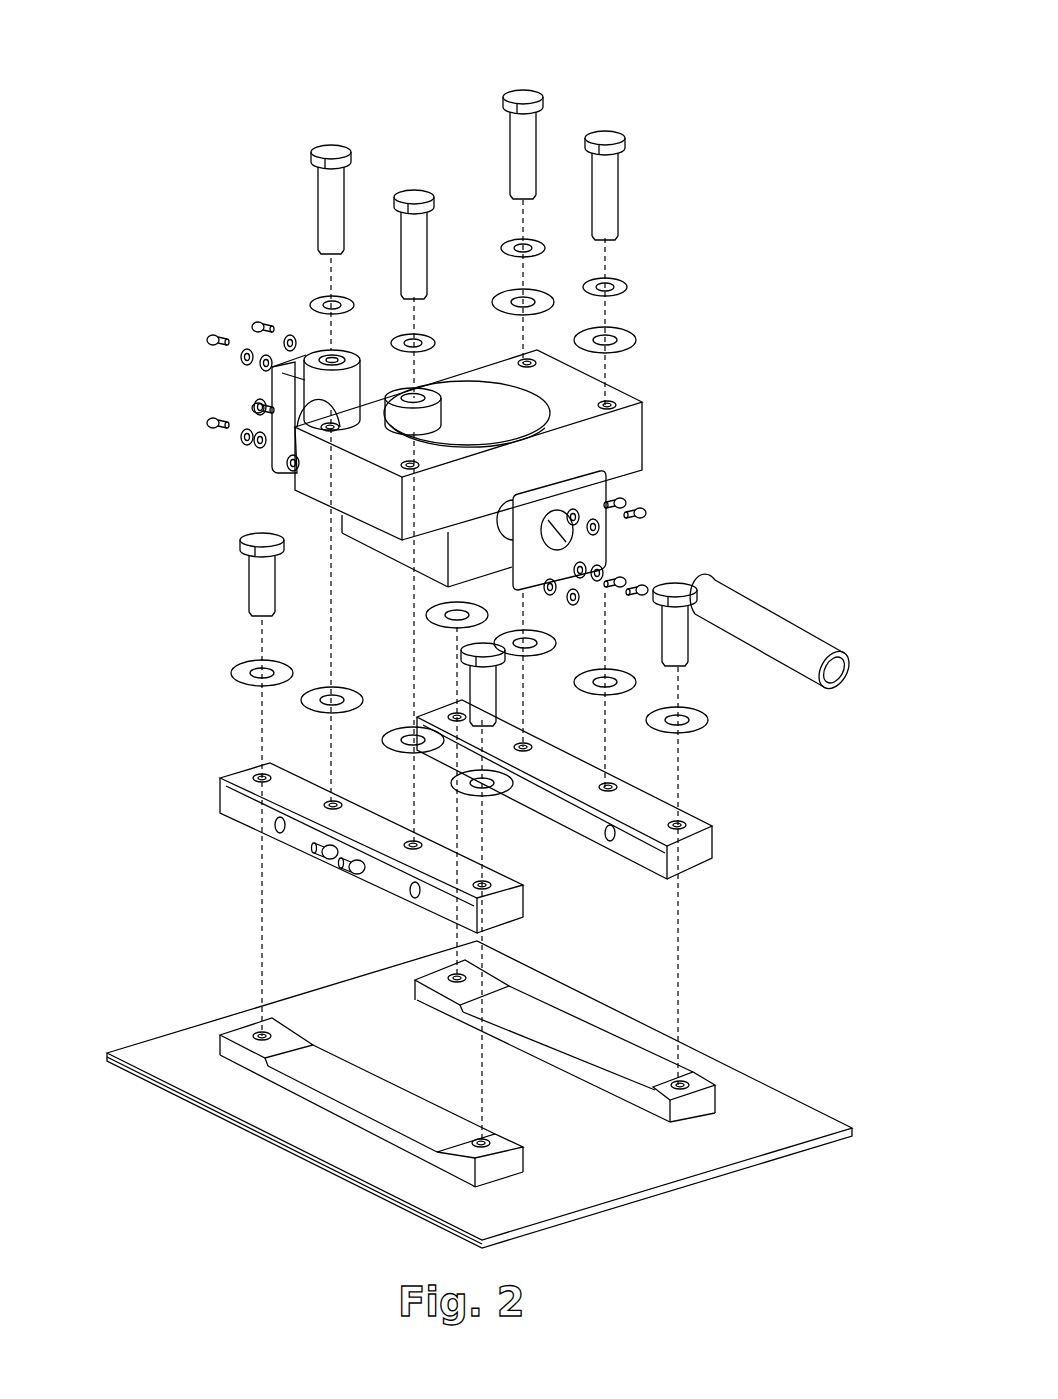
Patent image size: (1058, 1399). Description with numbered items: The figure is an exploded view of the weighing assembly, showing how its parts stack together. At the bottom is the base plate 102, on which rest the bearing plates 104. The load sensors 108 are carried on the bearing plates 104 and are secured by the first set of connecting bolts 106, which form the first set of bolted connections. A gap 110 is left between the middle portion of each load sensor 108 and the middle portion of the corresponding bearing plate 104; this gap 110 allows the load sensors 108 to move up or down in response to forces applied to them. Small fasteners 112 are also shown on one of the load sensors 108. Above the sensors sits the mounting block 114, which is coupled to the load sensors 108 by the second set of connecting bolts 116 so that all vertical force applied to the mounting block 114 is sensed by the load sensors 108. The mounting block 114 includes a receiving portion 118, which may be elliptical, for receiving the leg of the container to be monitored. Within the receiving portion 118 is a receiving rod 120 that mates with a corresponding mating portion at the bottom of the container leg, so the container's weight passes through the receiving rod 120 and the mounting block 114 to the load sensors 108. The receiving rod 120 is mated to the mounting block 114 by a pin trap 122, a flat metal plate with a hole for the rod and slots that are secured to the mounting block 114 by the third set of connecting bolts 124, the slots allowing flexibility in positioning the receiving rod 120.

The base plate 102 is at (605, 1126).
The bearing plates 104 is at (690, 1097).
The first set of connecting bolts 106 is at (242, 542).
The load sensors 108 is at (220, 783).
The gap 110 is at (307, 1063).
The set screw 112 is at (322, 850).
The mounting block 114 is at (620, 437).
The second set of connecting bolts 116 is at (347, 155).
The receiving portion 118 is at (612, 385).
The receiving rod 120 is at (777, 650).
The pin trap 122 is at (287, 393).
The third set of connecting bolts 124 is at (257, 325).